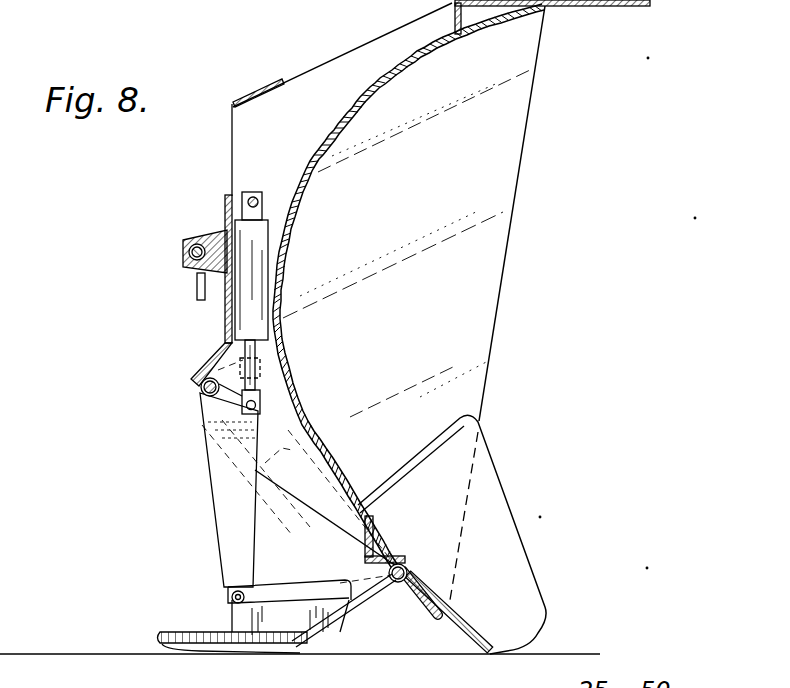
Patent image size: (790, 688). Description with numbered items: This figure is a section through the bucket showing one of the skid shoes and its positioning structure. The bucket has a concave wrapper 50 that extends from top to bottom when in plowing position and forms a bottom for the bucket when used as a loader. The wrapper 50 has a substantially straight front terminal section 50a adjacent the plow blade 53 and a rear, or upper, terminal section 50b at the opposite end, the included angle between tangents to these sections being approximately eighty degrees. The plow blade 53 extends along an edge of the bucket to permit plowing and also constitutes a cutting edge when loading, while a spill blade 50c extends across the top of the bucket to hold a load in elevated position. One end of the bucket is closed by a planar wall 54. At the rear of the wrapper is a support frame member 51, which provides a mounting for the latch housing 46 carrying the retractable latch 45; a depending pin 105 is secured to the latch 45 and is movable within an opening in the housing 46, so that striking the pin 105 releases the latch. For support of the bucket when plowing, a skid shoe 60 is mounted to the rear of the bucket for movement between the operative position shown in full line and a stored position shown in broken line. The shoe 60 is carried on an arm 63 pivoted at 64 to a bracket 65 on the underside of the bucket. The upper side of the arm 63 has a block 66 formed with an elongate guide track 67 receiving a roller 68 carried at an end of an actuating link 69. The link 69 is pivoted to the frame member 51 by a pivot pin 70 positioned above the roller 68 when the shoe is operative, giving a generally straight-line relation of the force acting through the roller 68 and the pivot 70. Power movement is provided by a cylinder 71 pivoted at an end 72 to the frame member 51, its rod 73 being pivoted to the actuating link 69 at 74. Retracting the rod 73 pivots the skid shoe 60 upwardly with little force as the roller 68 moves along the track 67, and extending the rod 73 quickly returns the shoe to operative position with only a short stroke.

The retractable latch 45 is at (186, 252).
The latch housing 46 is at (188, 238).
The concave wrapper 50 is at (306, 183).
The front terminal section 50a is at (422, 580).
The rear terminal section 50b is at (476, 32).
The spill blade 50c is at (632, 6).
The support frame member 51 is at (305, 84).
The plow blade 53 is at (467, 621).
The planar wall 54 is at (514, 210).
The skid shoe 60 is at (172, 631).
The arm 63 is at (362, 608).
The pivot 64 is at (401, 564).
The bracket 65 is at (383, 540).
The block 66 is at (310, 614).
The guide track 67 is at (283, 597).
The roller 68 is at (231, 592).
The actuating link 69 is at (222, 494).
The pivot pin 70 is at (200, 392).
The cylinder 71 is at (240, 322).
The cylinder pivot end 72 is at (255, 198).
The piston rod 73 is at (258, 356).
The rod pivot 74 is at (262, 400).
The depending pin 105 is at (196, 290).